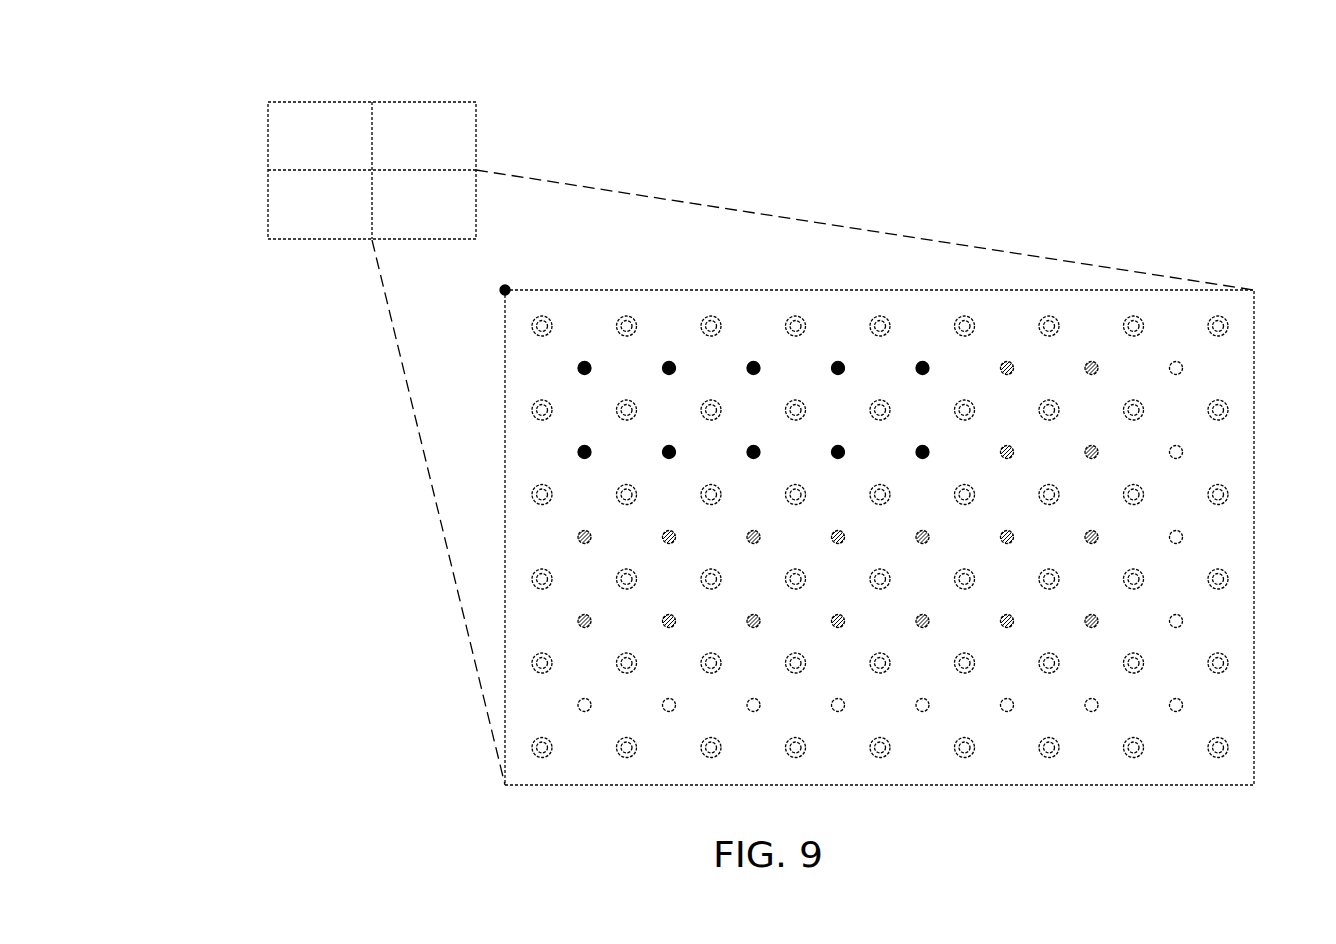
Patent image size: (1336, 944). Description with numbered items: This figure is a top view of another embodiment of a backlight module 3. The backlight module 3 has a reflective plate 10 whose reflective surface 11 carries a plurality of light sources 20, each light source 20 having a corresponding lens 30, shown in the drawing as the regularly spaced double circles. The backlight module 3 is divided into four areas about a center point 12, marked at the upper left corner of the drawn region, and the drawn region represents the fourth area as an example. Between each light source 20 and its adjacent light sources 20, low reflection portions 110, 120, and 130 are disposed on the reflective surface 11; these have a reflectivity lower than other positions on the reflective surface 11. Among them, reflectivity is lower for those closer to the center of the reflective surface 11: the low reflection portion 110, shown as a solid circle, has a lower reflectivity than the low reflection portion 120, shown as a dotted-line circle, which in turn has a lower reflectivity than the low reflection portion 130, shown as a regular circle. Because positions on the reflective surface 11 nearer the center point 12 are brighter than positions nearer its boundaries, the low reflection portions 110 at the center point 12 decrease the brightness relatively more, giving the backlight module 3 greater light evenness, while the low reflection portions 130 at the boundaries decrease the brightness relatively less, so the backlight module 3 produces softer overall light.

The backlight module 3 is at (225, 46).
The reflective plate 10 is at (425, 100).
The reflective surface 11 is at (305, 118).
The center point 12 is at (505, 291).
The light source 20 is at (1228, 495).
The lens 30 is at (1228, 325).
The low reflection portion 110 is at (584, 368).
The low reflection portion 120 is at (584, 537).
The low reflection portion 130 is at (584, 705).